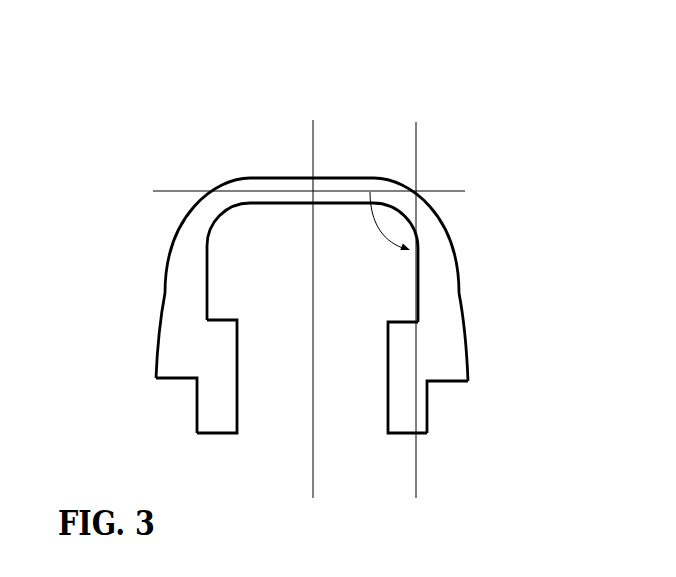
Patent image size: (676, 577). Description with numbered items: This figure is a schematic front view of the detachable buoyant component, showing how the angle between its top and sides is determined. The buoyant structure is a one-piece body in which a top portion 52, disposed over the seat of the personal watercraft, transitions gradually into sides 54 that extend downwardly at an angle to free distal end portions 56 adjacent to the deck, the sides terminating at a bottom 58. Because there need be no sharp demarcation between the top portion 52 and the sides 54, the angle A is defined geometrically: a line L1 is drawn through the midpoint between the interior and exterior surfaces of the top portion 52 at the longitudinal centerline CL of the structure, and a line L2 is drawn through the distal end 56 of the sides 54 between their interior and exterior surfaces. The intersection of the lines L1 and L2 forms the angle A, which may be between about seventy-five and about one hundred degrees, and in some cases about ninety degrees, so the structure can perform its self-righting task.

The top portion 52 is at (268, 175).
The sides 54 is at (165, 293).
The free distal end portions 56 is at (195, 410).
The bottom of the sides 58 is at (223, 435).
The line L1 is at (168, 190).
The longitudinal centerline CL is at (313, 147).
The line L2 is at (422, 468).
The angle A is at (383, 228).